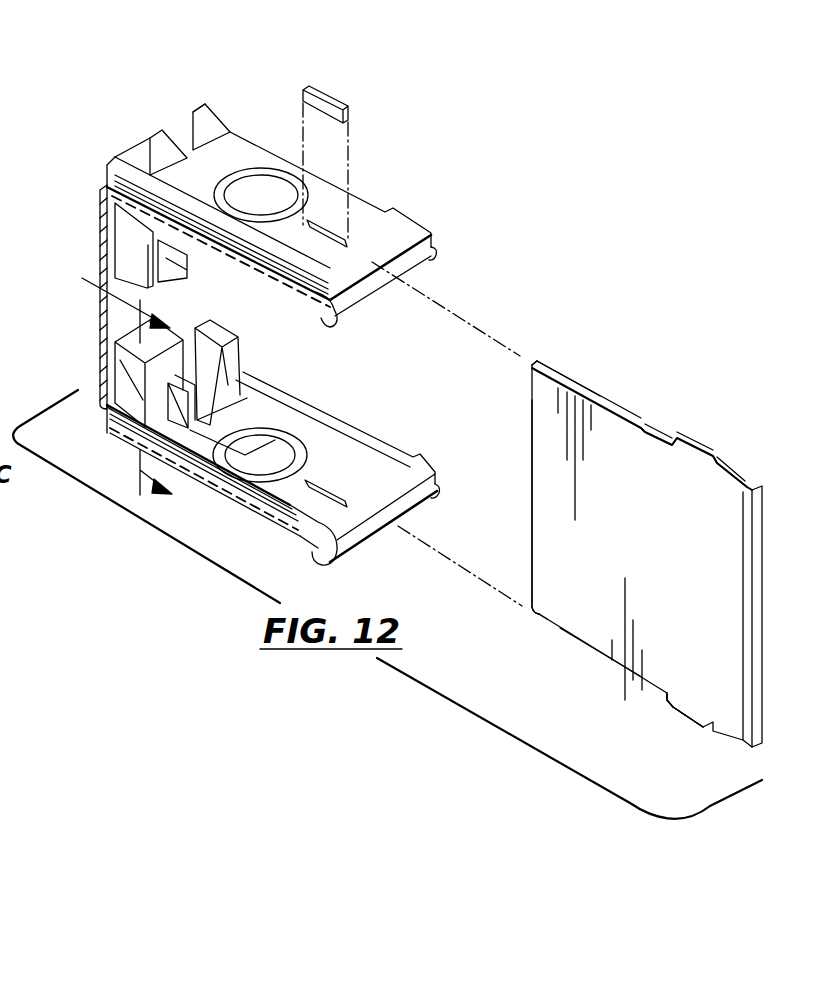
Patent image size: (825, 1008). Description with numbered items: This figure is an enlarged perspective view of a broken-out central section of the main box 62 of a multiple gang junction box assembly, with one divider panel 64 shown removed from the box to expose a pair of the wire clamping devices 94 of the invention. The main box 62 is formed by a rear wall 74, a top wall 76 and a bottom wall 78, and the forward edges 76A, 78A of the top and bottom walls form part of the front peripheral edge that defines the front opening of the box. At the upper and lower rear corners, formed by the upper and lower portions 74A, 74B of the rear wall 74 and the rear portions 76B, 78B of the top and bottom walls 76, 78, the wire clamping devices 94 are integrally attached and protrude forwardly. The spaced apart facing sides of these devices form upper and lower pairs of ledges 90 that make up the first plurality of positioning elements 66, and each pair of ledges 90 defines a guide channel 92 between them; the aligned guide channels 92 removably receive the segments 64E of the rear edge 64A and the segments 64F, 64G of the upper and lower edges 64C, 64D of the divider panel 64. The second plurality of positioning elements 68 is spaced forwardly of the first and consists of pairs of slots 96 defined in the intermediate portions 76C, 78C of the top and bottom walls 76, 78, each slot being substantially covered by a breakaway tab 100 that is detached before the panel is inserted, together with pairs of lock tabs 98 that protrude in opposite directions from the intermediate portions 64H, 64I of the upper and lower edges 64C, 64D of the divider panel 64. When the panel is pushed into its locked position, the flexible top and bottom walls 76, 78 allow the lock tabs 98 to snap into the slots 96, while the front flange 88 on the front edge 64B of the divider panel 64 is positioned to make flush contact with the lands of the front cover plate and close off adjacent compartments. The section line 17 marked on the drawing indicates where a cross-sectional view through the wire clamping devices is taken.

The section line 17- 17 is at (82, 288).
The main box 62 is at (238, 112).
The divider panel 64 is at (625, 385).
The rear edge 64A is at (530, 405).
The front edge 64B is at (747, 560).
The upper edge 64C is at (642, 427).
The lower edge 64D is at (602, 660).
The segments of the rear edge 64E is at (532, 380).
The segment of the upper edge 64F is at (548, 392).
The segment of the lower edge 64G is at (535, 618).
The intermediate portion of the upper edge 64H is at (688, 495).
The intermediate portion of the lower edge 64I is at (697, 683).
The first plurality of positioning elements 66 is at (215, 270).
The second plurality of positioning elements 68 is at (348, 218).
The rear wall 74 is at (100, 330).
The upper portion of the rear wall 74A is at (100, 213).
The lower portion of the rear wall 74B is at (100, 373).
The top wall 76 is at (240, 155).
The forward edge of the top wall 76A is at (400, 266).
The rear portion of the top wall 76B is at (200, 160).
The intermediate portion of the top wall 76C is at (330, 268).
The bottom wall 78 is at (390, 493).
The forward edge of the bottom wall 78A is at (400, 518).
The rear portion of the bottom wall 78B is at (208, 455).
The intermediate portion of the bottom wall 78C is at (323, 515).
The front flange 88 is at (753, 632).
The ledges 90 is at (190, 368).
The guide channels 92 is at (220, 348).
The wire clamping devices 94 is at (123, 227).
The slots 96 is at (103, 188).
The lock tabs 98 is at (110, 425).
The breakaway tabs 100 is at (326, 97).